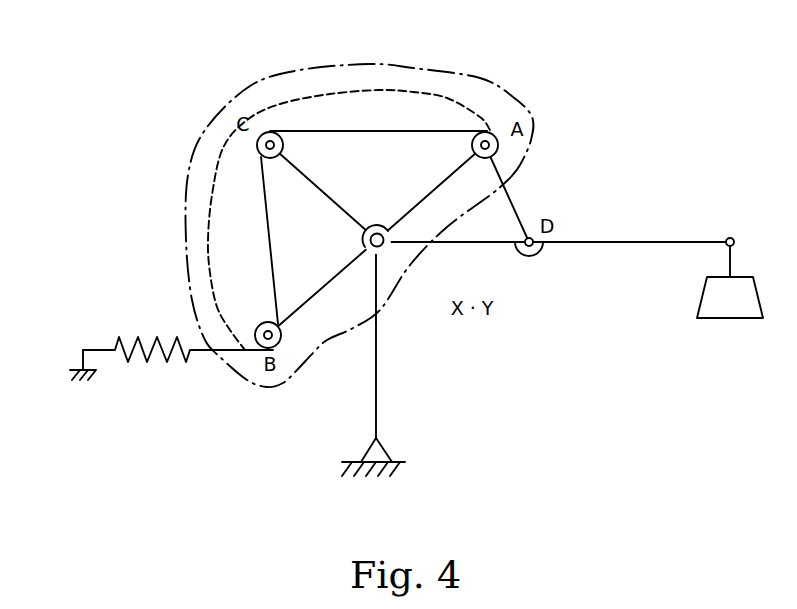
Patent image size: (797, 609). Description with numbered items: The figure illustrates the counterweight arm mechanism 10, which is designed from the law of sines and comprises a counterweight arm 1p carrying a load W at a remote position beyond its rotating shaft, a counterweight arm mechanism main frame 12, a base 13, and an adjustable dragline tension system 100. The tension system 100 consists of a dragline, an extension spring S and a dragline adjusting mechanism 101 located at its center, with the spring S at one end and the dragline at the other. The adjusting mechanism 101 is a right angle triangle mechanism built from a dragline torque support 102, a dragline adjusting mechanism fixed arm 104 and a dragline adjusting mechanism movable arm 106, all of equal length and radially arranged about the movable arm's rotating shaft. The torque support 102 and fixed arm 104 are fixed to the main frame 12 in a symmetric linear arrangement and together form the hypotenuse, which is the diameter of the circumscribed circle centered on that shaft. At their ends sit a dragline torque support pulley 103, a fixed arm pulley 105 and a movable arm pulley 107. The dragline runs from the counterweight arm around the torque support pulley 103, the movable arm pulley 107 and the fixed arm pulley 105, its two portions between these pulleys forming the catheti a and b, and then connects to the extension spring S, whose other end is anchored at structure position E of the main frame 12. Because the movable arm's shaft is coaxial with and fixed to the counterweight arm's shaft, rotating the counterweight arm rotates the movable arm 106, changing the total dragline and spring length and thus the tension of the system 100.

The adjustable dragline tension system 100 is at (144, 393).
The dragline adjusting mechanism 101 is at (185, 178).
The dragline torque support 102 is at (452, 183).
The dragline torque support pulley 103 is at (513, 167).
The dragline adjusting mechanism fixed arm 104 is at (297, 320).
The dragline adjusting mechanism fixed arm pulley 105 is at (255, 326).
The dragline adjusting mechanism movable arm 106 is at (318, 164).
The dragline adjusting mechanism movable arm pulley 107 is at (256, 163).
The counterweight arm mechanism 10 is at (546, 316).
The counterweight arm mechanism main frame 12 is at (388, 378).
The base 13 is at (397, 443).
The lever arm 1p is at (672, 233).
The extension spring S is at (145, 375).
The load W is at (730, 282).
The structure position of the main frame E is at (83, 352).
The cathetus of the right angle triangle mechanism a is at (257, 157).
The cathetus of the right angle triangle mechanism b is at (272, 129).